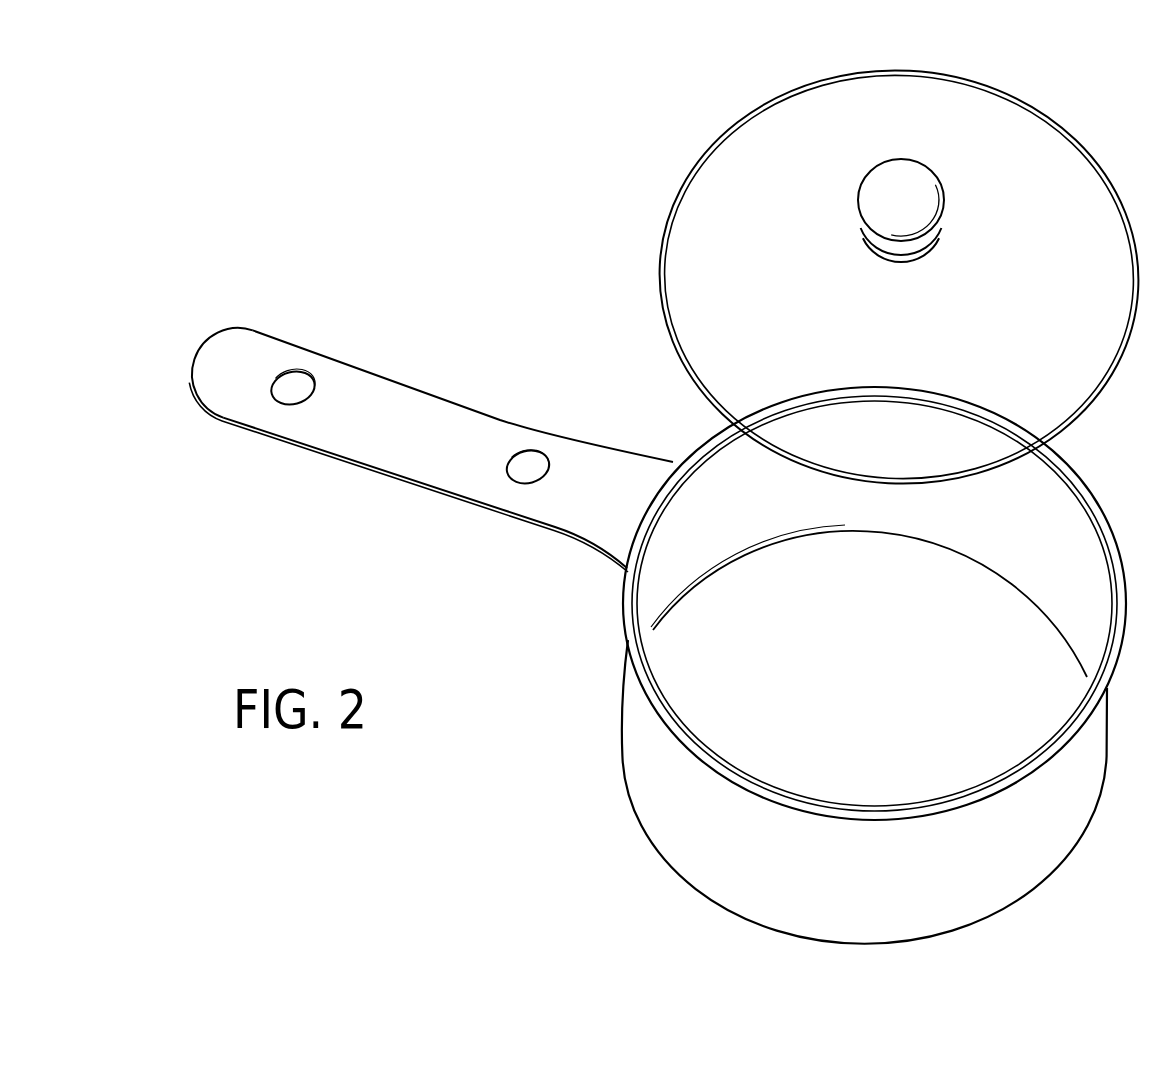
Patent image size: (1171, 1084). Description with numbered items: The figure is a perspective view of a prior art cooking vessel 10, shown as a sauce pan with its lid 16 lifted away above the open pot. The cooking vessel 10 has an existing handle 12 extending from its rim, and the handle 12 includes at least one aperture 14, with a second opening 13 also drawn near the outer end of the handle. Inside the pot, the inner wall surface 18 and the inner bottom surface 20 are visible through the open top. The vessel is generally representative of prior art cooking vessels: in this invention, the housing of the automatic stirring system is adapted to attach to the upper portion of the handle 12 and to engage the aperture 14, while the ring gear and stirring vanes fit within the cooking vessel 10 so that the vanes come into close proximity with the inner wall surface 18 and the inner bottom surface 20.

The cooking vessel 10 is at (553, 280).
The handle 12 is at (412, 420).
The handle hole 13 is at (295, 372).
The aperture 14 is at (528, 451).
The lid 16 is at (1027, 133).
The inner wall surface 18 is at (983, 526).
The inner bottom surface 20 is at (877, 692).